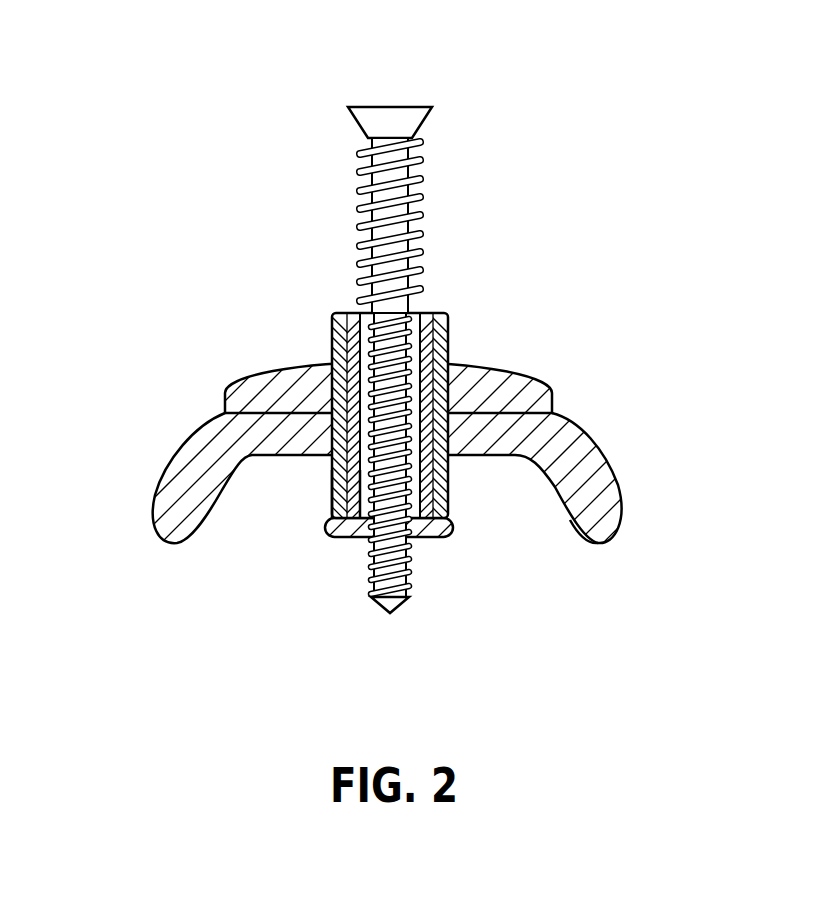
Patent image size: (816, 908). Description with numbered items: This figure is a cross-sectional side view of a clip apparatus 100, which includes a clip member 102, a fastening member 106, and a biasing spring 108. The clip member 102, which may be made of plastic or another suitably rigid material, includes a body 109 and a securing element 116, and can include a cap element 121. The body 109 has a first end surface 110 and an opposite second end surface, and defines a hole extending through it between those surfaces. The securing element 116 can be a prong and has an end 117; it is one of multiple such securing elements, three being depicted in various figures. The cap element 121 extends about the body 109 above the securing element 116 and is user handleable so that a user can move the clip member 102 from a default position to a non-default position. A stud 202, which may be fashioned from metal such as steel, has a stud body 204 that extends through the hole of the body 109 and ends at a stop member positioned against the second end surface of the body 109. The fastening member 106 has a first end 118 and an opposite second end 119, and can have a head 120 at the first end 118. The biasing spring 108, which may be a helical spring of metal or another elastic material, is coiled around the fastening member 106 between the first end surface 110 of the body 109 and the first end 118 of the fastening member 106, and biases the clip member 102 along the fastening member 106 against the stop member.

The clip apparatus 100 is at (142, 603).
The clip member 102 is at (180, 440).
The fastening member 106 is at (360, 600).
The biasing spring 108 is at (407, 282).
The body 109 is at (437, 342).
The first end surface 110 is at (440, 304).
The securing element 116 is at (601, 471).
The end 117 is at (600, 542).
The first end 118 is at (416, 150).
The second end 119 is at (390, 612).
The head 120 is at (400, 108).
The cap element 121 is at (273, 362).
The stud 202 is at (331, 543).
The stud body 204 is at (353, 478).